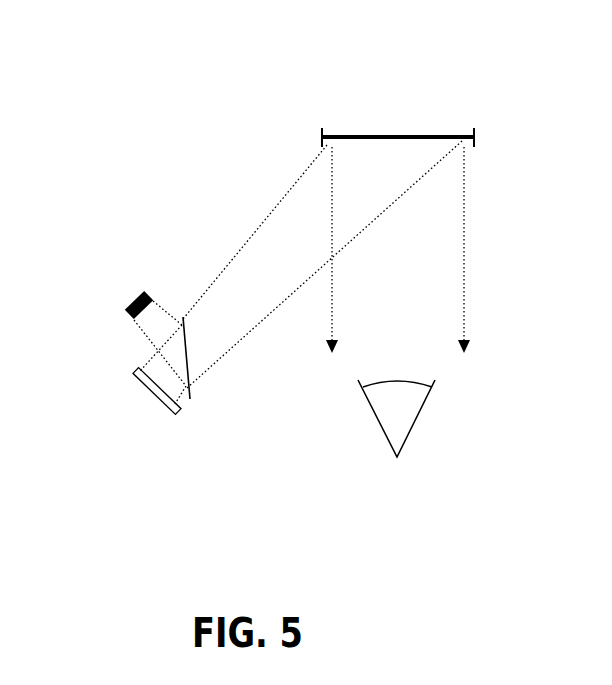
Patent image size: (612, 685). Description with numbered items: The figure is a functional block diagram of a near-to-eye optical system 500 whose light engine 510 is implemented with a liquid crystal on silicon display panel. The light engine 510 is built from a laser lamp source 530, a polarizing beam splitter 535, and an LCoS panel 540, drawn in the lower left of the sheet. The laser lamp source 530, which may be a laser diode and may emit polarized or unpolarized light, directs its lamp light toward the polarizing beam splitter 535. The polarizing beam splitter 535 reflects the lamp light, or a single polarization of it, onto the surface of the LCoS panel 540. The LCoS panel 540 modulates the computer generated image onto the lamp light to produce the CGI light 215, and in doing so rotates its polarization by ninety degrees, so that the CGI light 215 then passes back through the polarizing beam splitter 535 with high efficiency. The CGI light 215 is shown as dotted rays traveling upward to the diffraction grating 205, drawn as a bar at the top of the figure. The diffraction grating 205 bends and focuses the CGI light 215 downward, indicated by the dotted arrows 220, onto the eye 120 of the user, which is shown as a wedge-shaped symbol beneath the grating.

The near-to-eye optical system 500 is at (111, 79).
The diffraction grating 205 is at (422, 136).
The CGI light 215 is at (258, 227).
The output light 220 is at (465, 277).
The eye 120 is at (418, 417).
The light engine 510 is at (172, 380).
The laser lamp source 530 is at (133, 306).
The polarizing beam splitter 535 is at (187, 358).
The LCoS panel 540 is at (155, 393).